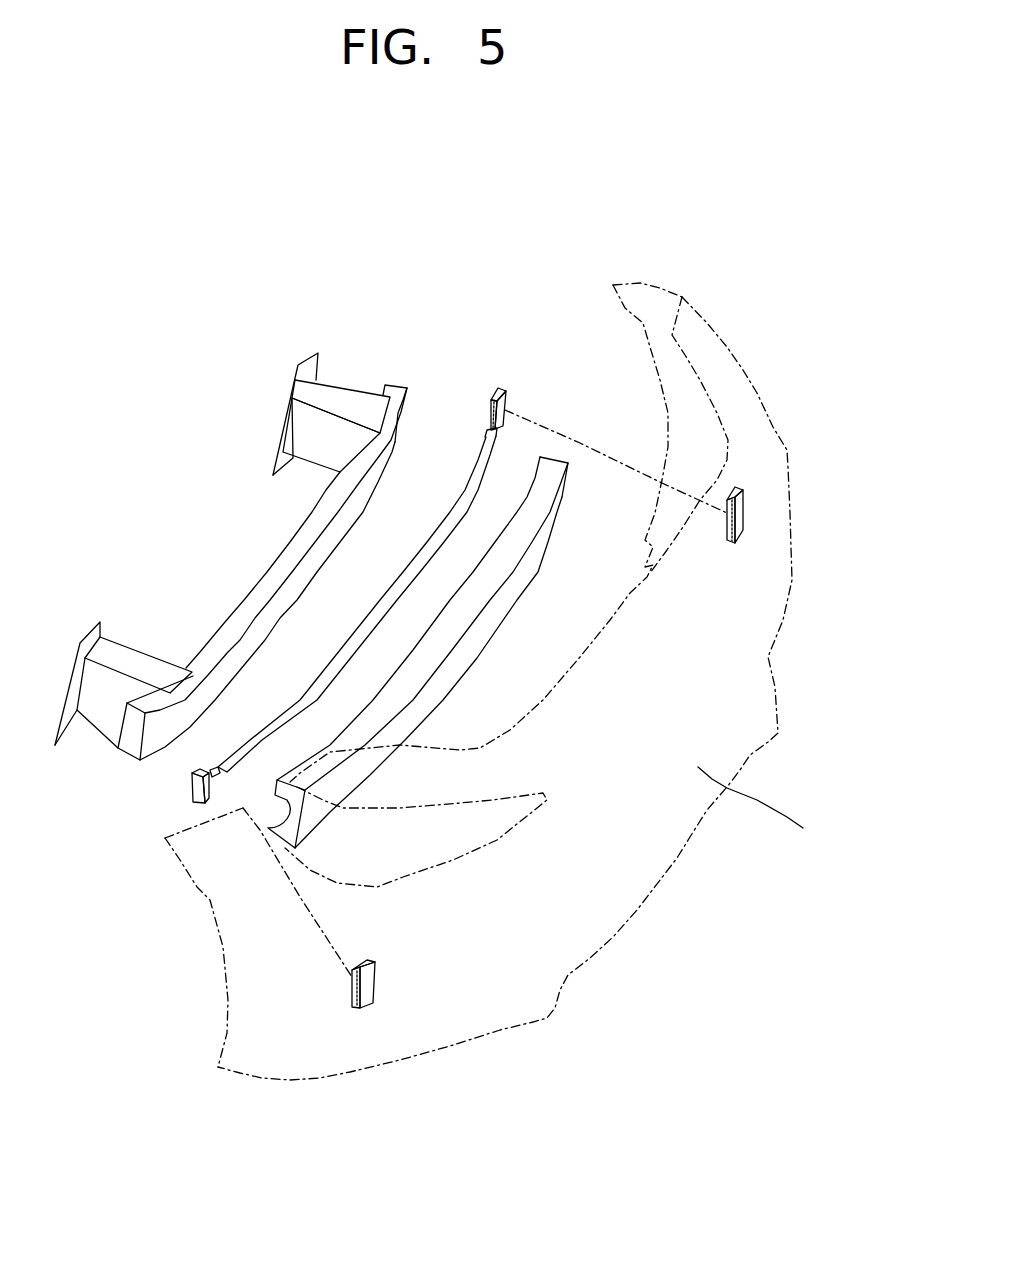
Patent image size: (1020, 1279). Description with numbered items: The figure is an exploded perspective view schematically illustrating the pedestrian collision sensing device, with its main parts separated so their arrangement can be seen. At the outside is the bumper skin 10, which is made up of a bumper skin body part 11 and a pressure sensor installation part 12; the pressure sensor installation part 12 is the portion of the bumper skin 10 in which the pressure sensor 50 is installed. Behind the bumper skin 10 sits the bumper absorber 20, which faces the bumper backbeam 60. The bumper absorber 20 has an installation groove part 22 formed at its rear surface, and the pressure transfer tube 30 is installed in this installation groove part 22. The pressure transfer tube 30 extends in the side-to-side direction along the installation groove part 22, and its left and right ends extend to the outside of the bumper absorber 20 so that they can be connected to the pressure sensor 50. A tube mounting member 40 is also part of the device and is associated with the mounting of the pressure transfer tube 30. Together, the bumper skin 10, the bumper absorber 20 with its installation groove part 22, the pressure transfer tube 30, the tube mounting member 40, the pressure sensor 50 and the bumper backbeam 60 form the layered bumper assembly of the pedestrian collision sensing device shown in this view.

The bumper skin 10 is at (495, 681).
The bumper skin body part 11 is at (769, 810).
The pressure sensor installation part 12 is at (445, 1085).
The bumper absorber 20 is at (552, 475).
The installation groove part 22 is at (212, 855).
The pressure transfer tube 30 is at (183, 687).
The tube mounting member 40 is at (475, 482).
The pressure sensor 50 is at (192, 790).
The bumper backbeam 60 is at (265, 590).